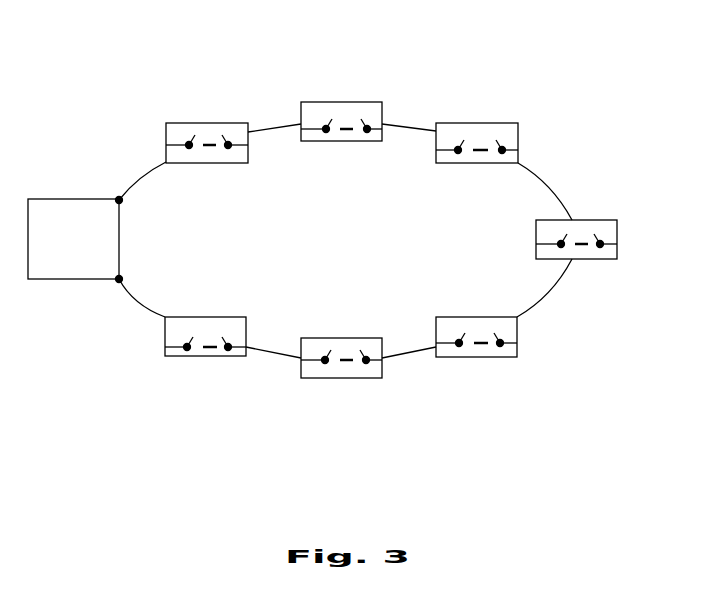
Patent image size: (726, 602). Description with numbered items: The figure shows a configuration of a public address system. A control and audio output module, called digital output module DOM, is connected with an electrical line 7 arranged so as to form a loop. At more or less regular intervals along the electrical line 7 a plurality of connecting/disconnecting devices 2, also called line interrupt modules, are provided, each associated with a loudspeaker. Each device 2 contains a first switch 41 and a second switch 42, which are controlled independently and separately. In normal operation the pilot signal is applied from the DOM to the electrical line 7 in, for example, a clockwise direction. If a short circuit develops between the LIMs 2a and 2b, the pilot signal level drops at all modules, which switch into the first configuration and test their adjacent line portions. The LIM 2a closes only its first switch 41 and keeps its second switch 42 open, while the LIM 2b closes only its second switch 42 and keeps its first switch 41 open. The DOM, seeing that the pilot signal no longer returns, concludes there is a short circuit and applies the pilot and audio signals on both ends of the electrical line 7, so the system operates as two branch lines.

The connecting/disconnecting device 2 is at (215, 163).
The LIM 2a is at (342, 141).
The LIM 2b is at (478, 163).
The electrical line 7 is at (147, 174).
The first switch 41 is at (195, 135).
The second switch 42 is at (222, 135).
The digital output module DOM is at (75, 240).